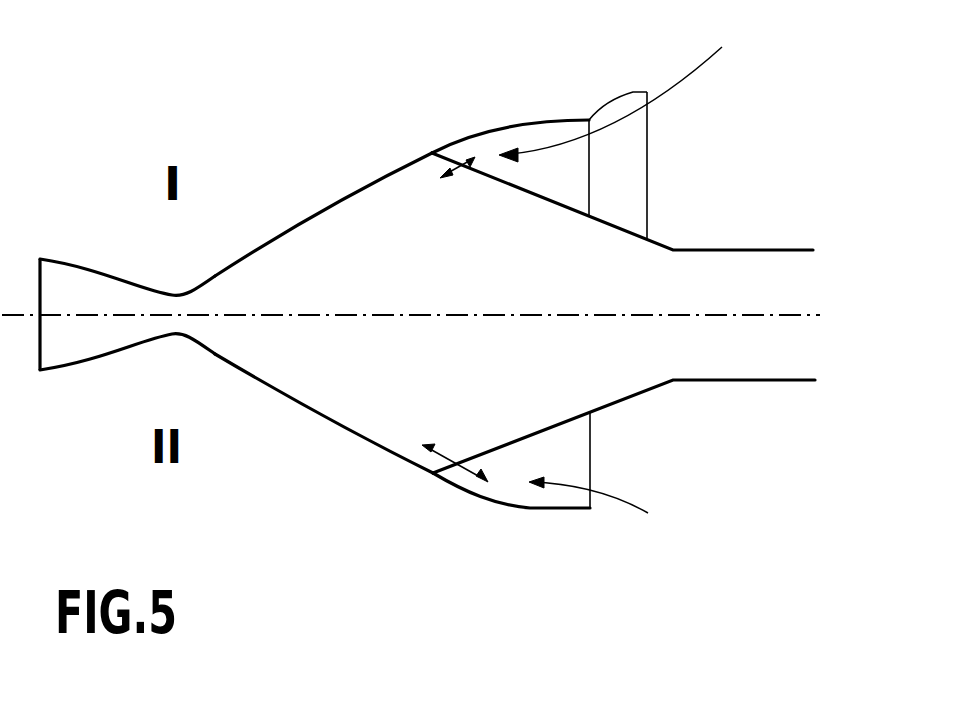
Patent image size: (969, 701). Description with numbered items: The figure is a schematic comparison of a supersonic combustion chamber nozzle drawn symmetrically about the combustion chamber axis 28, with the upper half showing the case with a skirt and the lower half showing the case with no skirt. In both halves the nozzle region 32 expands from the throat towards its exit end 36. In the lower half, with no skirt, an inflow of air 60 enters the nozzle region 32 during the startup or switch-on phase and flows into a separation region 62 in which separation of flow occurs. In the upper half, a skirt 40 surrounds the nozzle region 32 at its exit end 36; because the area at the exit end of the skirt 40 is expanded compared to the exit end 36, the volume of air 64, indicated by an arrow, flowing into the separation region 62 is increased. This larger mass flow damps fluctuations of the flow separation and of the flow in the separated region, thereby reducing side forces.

The combustion chamber axis 28 is at (83, 315).
The nozzle region 32 is at (353, 403).
The exit end 36 is at (590, 462).
The skirt 40 is at (627, 108).
The inflow of air 60 is at (617, 498).
The separation region 62 is at (488, 175).
The volume of air 64 is at (573, 145).